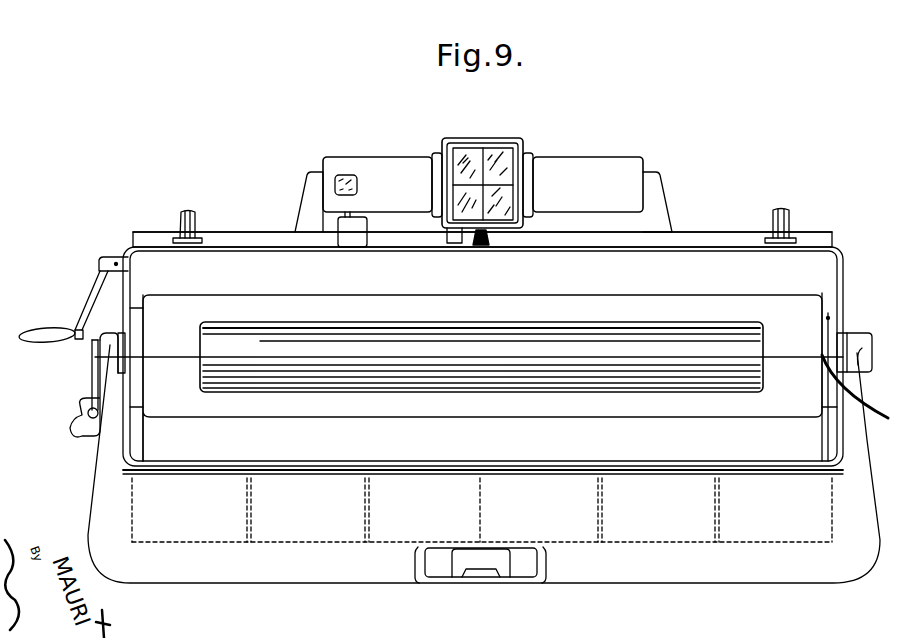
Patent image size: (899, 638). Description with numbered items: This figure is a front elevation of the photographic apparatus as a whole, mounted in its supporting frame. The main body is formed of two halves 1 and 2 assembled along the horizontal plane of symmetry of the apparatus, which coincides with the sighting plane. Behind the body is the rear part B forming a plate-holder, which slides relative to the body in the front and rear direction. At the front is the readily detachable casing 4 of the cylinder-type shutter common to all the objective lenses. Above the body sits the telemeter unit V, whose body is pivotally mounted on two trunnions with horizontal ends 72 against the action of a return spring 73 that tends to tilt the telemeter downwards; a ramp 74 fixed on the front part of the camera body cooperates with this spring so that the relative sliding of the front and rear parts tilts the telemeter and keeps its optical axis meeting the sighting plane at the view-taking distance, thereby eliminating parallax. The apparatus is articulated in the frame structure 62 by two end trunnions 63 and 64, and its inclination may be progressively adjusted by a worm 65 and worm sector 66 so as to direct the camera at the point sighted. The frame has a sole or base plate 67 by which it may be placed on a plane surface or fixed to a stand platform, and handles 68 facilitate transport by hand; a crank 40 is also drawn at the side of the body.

The half of main body 1 is at (680, 260).
The half of main body 2 is at (800, 408).
The casing of shutter 4 is at (192, 307).
The crank handle 40 is at (105, 258).
The frame structure 62 is at (103, 514).
The end trunnion 63 is at (93, 357).
The end trunnion 64 is at (847, 336).
The worm 65 is at (91, 418).
The worm sector 66 is at (97, 380).
The sole or base plate 67 is at (446, 568).
The handle 68 is at (190, 214).
The trunnion with horizontal ends 72 is at (322, 186).
The return spring 73 is at (486, 238).
The ramp 74 is at (445, 243).
The rear part forming plate-holder B is at (153, 236).
The viewer V is at (572, 167).